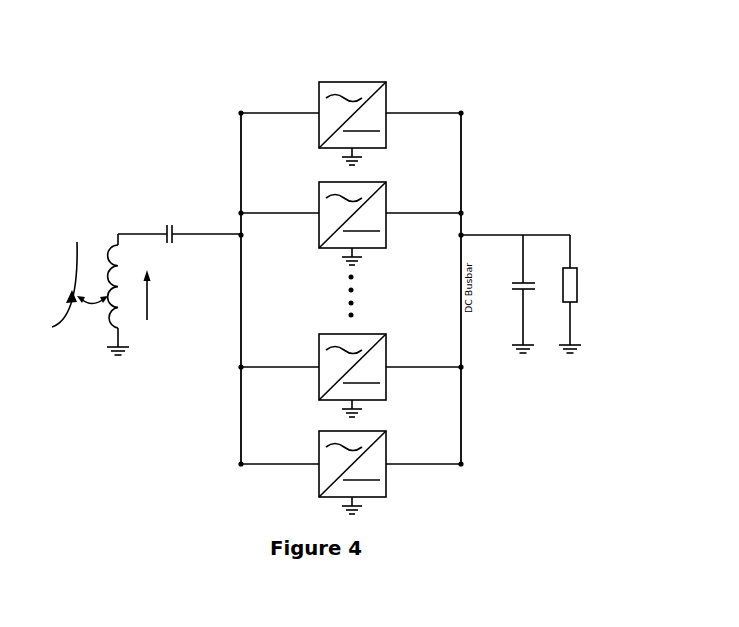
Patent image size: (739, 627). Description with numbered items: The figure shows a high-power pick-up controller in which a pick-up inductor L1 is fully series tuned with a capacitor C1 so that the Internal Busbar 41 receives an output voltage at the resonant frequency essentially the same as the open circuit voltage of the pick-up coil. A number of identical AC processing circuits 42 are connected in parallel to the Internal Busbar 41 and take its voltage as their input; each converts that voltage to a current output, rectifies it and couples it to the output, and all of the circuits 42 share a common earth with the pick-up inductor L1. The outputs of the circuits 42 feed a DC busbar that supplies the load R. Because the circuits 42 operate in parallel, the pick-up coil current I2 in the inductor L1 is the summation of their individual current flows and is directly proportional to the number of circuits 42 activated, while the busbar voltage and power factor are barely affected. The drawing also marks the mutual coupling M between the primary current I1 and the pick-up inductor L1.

The Internal Busbar 41 is at (238, 431).
The AC processing circuit 42 is at (402, 291).
The capacitor C1 is at (168, 243).
The pick-up inductor L1 is at (122, 286).
The load R is at (584, 285).
The mutual inductance M is at (92, 294).
The primary current I1 is at (53, 284).
The pick-up coil current I2 is at (152, 295).